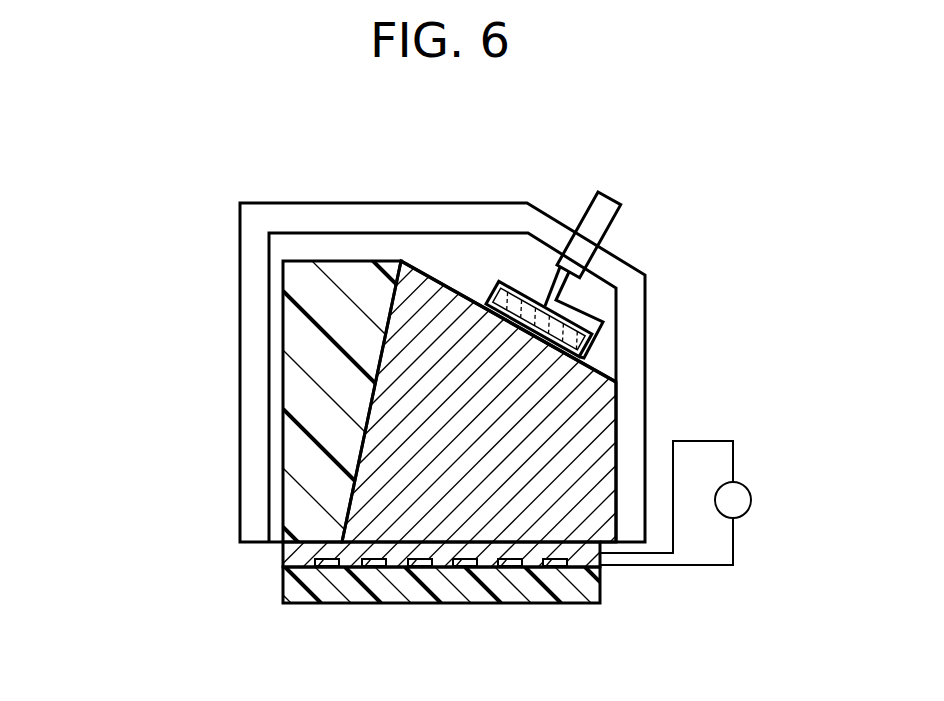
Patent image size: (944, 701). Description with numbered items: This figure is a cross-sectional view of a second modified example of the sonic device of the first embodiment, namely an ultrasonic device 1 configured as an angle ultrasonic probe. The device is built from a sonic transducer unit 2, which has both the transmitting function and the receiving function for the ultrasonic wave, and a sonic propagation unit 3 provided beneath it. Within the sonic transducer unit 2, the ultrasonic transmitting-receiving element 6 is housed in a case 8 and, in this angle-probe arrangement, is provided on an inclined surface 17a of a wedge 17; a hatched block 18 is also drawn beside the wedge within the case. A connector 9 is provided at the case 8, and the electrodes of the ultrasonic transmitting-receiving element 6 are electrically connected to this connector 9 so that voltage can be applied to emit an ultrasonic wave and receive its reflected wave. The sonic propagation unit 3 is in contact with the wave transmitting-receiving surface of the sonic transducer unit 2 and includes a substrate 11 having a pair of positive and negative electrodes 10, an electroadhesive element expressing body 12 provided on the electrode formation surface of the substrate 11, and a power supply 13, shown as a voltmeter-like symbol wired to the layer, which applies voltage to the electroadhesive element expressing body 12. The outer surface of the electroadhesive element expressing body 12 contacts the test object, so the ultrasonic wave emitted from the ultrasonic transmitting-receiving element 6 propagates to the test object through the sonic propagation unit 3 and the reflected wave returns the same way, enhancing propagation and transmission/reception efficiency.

The ultrasonic device 1 is at (565, 141).
The sonic transducer unit 2 is at (152, 208).
The sonic propagation unit 3 is at (152, 546).
The ultrasonic transmitting-receiving element 6 is at (497, 281).
The case 8 is at (343, 203).
The connector 9 is at (619, 204).
The electrodes 10 is at (328, 567).
The substrate 11 is at (300, 555).
The electroadhesive element expressing body 12 is at (441, 595).
The power supply 13 is at (746, 487).
The wedge 17 is at (573, 420).
The inclined surface 17a is at (600, 370).
The support block 18 is at (313, 407).